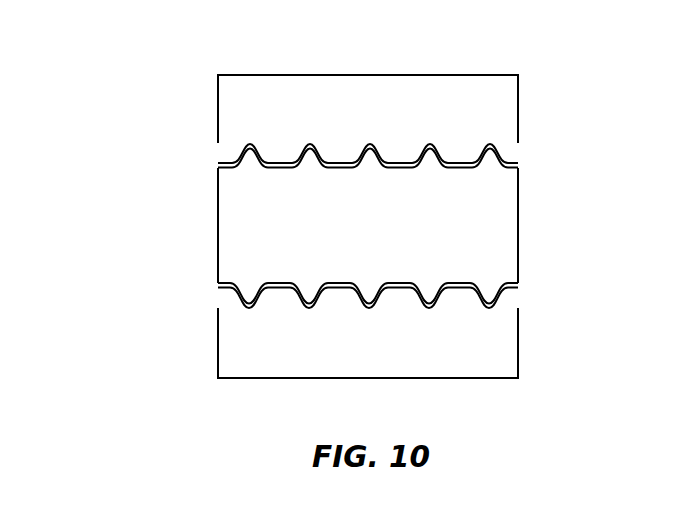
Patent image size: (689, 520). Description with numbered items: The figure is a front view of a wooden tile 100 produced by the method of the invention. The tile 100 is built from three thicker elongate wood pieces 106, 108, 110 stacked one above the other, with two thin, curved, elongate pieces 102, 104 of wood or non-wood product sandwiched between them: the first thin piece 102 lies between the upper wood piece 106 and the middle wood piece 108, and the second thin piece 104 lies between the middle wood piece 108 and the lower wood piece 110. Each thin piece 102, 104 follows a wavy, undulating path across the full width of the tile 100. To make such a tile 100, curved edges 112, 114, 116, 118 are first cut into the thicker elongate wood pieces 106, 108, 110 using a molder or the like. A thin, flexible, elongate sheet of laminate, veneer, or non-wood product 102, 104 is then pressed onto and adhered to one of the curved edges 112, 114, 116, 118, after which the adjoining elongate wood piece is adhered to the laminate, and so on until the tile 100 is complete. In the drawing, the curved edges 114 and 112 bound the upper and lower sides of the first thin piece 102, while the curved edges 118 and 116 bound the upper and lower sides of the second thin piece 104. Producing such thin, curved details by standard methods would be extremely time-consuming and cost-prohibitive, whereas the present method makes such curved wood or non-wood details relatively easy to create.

The tile 100 is at (156, 96).
The thin curved elongate piece 102 is at (407, 154).
The thin curved elongate piece 104 is at (407, 298).
The thicker elongate wood piece 106 is at (507, 116).
The thicker elongate wood piece 108 is at (507, 229).
The thicker elongate wood piece 110 is at (507, 339).
The curved edge 112 is at (400, 167).
The curved edge 114 is at (369, 145).
The curved edge 116 is at (430, 308).
The curved edge 118 is at (400, 282).